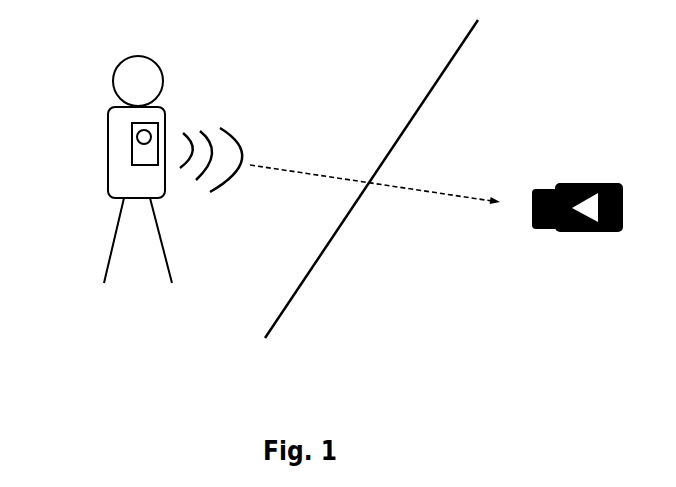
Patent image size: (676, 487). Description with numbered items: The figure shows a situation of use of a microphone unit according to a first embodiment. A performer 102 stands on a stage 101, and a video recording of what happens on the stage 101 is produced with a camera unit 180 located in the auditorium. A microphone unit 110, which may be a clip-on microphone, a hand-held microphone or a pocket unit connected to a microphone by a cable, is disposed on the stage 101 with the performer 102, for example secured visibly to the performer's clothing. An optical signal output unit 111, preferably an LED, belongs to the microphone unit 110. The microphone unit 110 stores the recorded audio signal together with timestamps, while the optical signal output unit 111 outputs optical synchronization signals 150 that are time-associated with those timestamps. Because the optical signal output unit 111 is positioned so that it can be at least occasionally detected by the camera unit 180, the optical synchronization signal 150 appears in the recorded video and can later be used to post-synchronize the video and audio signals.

The stage 101 is at (371, 179).
The performer 102 is at (165, 78).
The microphone unit 110 is at (132, 141).
The optical signal output unit 111 is at (151, 136).
The optical synchronization signal 150 is at (375, 184).
The camera unit 180 is at (568, 183).